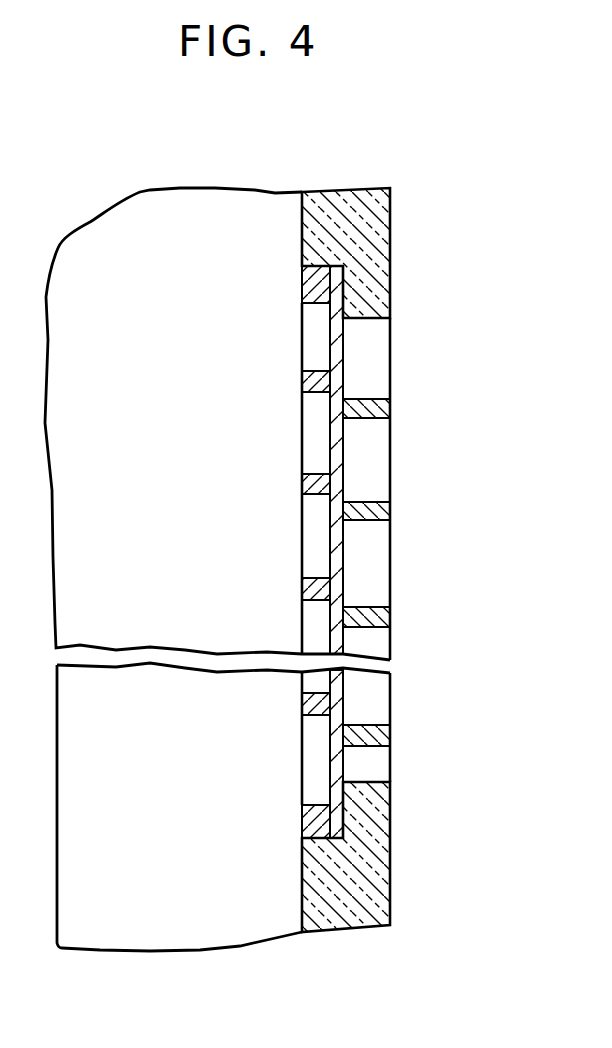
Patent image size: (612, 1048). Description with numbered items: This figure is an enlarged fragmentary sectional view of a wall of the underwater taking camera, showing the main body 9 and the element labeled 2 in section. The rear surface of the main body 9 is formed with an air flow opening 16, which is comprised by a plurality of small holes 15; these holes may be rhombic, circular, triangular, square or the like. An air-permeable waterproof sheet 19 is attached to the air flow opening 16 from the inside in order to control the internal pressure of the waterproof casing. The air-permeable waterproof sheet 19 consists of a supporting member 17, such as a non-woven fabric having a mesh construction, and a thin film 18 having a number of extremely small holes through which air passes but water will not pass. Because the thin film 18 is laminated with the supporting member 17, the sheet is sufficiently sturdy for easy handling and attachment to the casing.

The workpiece body 2 is at (217, 207).
The main body 9 is at (385, 248).
The small holes 15 is at (384, 568).
The air flow opening 16 is at (396, 400).
The supporting member 17 is at (322, 712).
The thin film 18 is at (340, 453).
The air-permeable waterproof sheet 19 is at (272, 528).